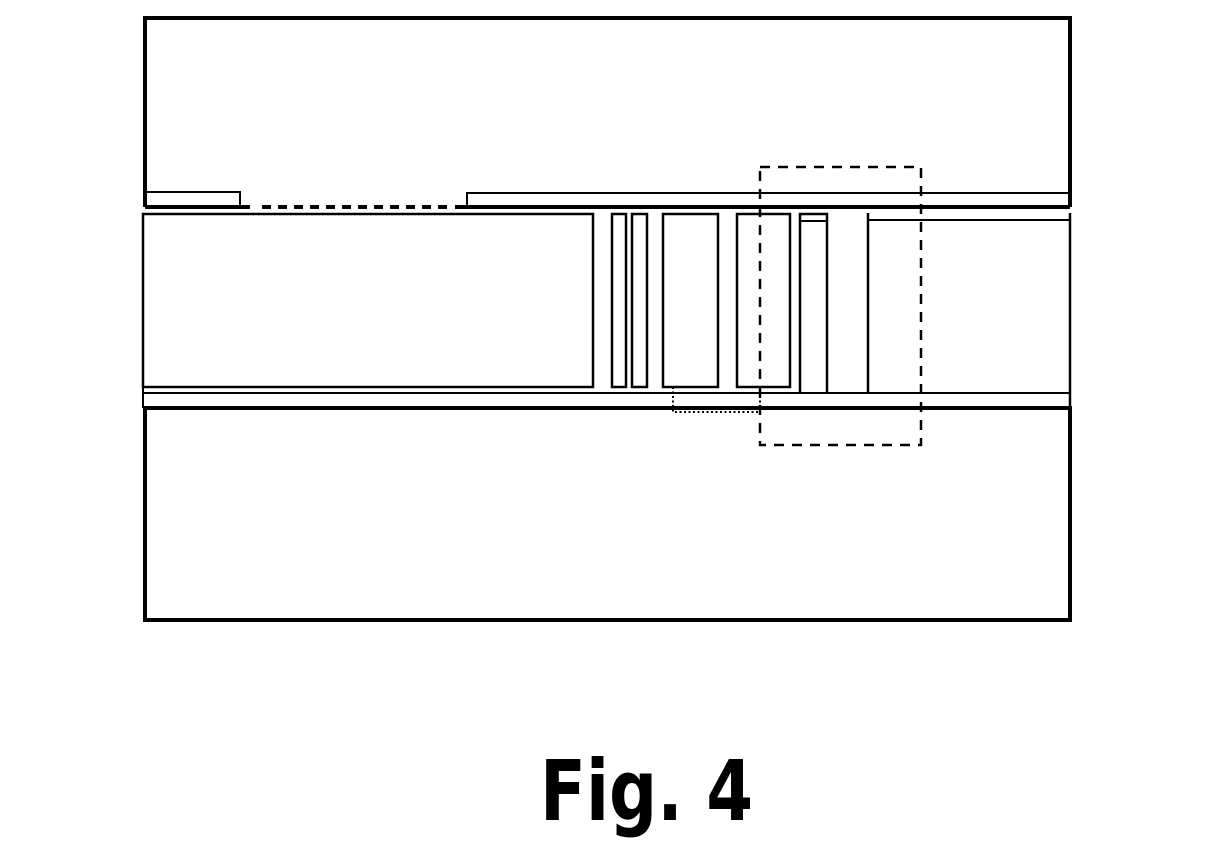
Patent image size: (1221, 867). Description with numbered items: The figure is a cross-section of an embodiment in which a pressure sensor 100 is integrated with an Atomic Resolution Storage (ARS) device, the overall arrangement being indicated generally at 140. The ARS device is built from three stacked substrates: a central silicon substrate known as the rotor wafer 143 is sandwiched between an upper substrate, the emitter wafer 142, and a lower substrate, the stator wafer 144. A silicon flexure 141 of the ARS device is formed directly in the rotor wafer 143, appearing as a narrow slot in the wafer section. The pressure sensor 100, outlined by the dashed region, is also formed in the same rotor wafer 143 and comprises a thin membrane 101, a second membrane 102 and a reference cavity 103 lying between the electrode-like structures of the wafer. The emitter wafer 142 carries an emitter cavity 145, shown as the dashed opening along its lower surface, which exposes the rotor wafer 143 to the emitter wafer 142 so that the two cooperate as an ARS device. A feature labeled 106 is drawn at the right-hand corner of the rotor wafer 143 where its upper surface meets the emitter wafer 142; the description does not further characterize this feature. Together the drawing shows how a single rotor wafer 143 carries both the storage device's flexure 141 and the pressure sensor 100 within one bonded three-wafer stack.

The pressure sensor 100 is at (882, 420).
The thin membrane 101 is at (822, 247).
The second membrane 102 is at (762, 248).
The reference cavity 103 is at (847, 302).
The rotor wafer surface step 106 is at (1073, 217).
The micro-actuator assembly 140 is at (548, 148).
The silicon flexure 141 is at (616, 368).
The emitter wafer 142 is at (607, 112).
The rotor wafer 143 is at (606, 312).
The stator wafer 144 is at (607, 514).
The emitter cavity 145 is at (288, 203).